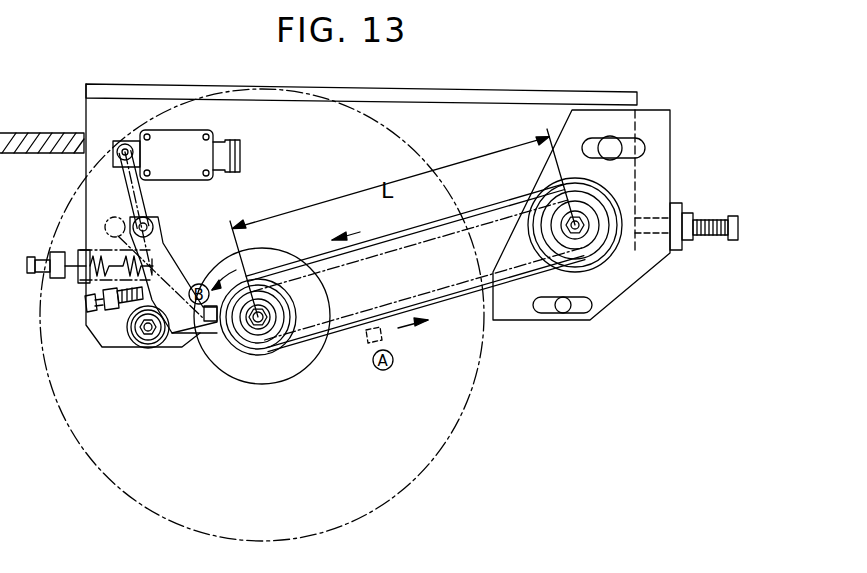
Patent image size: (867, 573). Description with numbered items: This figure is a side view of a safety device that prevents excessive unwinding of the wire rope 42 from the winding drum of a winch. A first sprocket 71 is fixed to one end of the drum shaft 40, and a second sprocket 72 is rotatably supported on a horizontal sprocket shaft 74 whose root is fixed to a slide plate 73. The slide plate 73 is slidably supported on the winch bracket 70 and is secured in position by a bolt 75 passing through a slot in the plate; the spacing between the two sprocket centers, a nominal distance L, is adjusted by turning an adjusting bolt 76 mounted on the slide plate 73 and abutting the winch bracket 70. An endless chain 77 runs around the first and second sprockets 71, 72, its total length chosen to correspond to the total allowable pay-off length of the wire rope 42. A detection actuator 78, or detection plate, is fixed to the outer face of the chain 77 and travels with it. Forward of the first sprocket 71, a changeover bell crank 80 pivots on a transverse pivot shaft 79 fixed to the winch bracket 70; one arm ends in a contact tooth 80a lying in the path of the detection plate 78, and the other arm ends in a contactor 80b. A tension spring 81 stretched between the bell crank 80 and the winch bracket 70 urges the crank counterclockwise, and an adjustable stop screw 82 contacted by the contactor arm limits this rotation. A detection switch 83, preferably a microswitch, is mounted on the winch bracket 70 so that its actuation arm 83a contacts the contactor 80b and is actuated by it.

The wire rope 42 is at (40, 133).
The winch bracket 70 is at (470, 110).
The first sprocket 71 is at (264, 348).
The second sprocket 72 is at (607, 207).
The slide plate 73 is at (650, 257).
The sprocket shaft 74 is at (582, 232).
The bolt 75 is at (605, 138).
The adjusting bolt 76 is at (717, 222).
The endless chain 77 is at (456, 310).
The detection actuator 78 is at (214, 322).
The pivot shaft 79 is at (145, 340).
The changeover bell crank 80 is at (163, 257).
The contact tooth 80a is at (203, 333).
The contactor 80b is at (158, 219).
The tension spring 81 is at (100, 258).
The adjustable stop screw 82 is at (120, 320).
The detection switch 83 is at (190, 133).
The actuation arm 83a is at (133, 189).
The drum shaft 40 is at (256, 342).